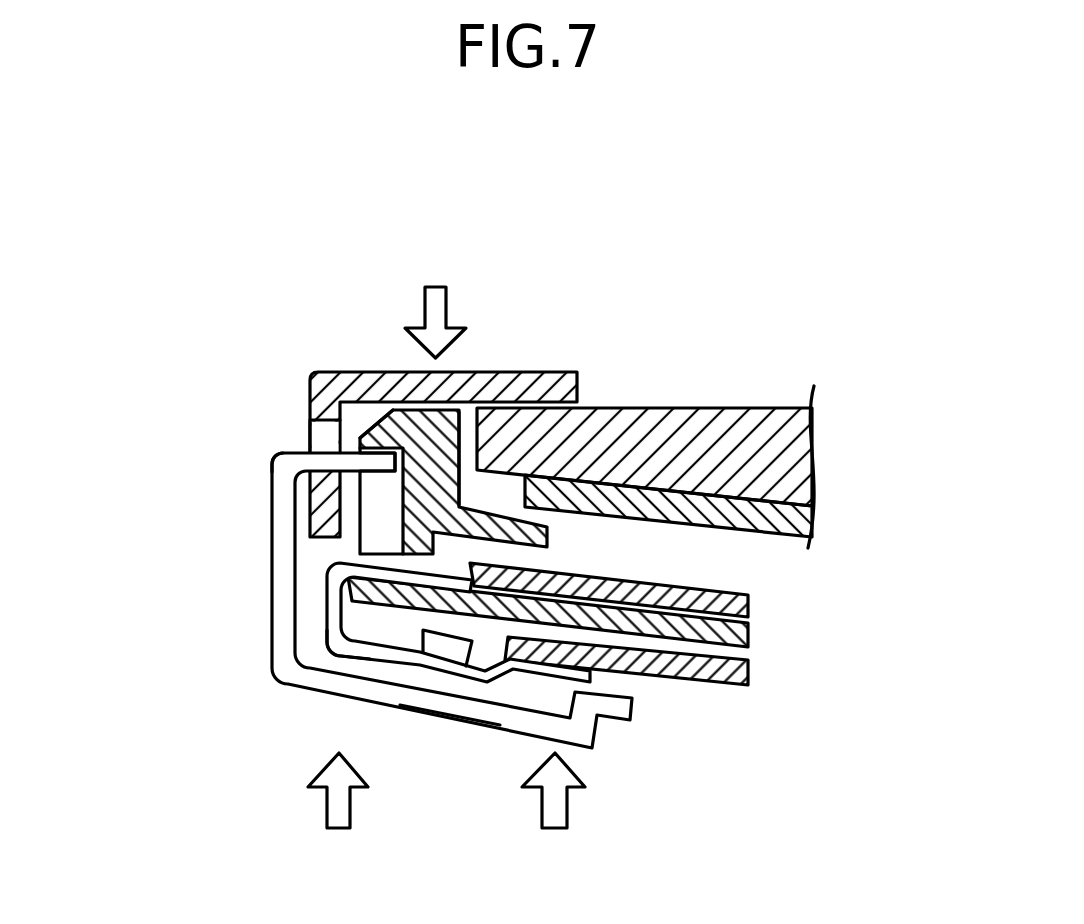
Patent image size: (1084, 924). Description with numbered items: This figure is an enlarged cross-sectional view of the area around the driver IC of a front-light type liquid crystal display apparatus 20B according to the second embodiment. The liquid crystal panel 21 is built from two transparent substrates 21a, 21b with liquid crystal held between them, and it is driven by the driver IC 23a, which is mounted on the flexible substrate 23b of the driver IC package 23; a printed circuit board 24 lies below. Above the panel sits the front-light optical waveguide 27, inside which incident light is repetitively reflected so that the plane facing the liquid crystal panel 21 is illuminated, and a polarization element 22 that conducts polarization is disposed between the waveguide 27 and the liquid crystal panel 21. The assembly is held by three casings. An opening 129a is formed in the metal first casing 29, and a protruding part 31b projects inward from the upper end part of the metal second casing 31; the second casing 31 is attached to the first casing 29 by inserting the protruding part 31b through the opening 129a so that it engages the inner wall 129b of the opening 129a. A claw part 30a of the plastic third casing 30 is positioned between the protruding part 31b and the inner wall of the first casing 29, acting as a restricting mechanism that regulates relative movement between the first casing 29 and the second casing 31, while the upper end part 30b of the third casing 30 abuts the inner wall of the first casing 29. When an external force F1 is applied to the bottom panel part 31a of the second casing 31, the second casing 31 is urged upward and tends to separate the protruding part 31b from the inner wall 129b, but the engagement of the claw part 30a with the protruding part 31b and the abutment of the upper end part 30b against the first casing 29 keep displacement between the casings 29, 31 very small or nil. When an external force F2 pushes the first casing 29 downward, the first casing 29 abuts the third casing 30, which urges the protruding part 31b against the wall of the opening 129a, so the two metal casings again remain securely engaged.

The liquid crystal display apparatus 20B is at (792, 192).
The liquid crystal panel 21 is at (648, 618).
The transparent substrate 21a is at (746, 620).
The transparent substrate 21b is at (747, 657).
The polarization element 22 is at (800, 527).
The driver IC package 23 is at (370, 675).
The driver IC 23a is at (445, 650).
The flexible substrate 23b is at (330, 663).
The printed circuit board 24 is at (700, 696).
The front-light optical waveguide 27 is at (797, 442).
The first casing 29 is at (298, 379).
The third casing 30 is at (457, 403).
The claw part 30a is at (387, 425).
The upper end part 30b is at (438, 446).
The second casing 31 is at (358, 623).
The bottom panel part 31a is at (470, 717).
The protruding part 31b is at (378, 474).
The opening 129a is at (310, 433).
The inner wall 129b is at (277, 462).
The external force F1 is at (473, 815).
The external force F2 is at (435, 297).